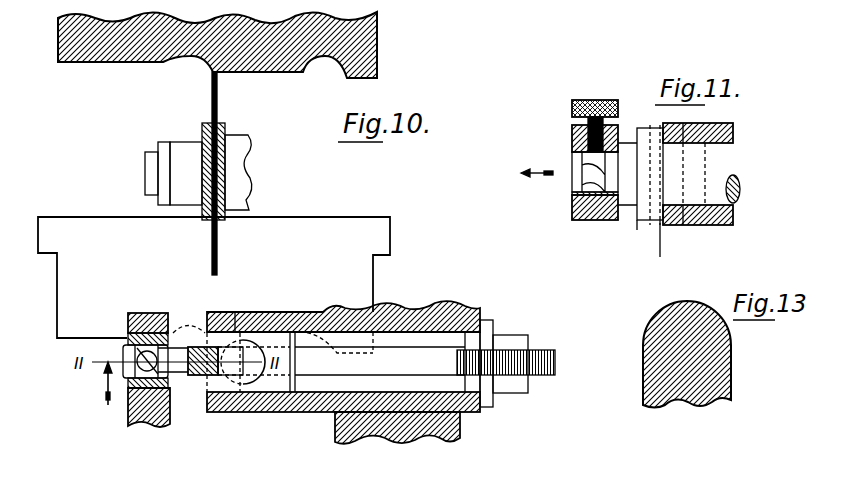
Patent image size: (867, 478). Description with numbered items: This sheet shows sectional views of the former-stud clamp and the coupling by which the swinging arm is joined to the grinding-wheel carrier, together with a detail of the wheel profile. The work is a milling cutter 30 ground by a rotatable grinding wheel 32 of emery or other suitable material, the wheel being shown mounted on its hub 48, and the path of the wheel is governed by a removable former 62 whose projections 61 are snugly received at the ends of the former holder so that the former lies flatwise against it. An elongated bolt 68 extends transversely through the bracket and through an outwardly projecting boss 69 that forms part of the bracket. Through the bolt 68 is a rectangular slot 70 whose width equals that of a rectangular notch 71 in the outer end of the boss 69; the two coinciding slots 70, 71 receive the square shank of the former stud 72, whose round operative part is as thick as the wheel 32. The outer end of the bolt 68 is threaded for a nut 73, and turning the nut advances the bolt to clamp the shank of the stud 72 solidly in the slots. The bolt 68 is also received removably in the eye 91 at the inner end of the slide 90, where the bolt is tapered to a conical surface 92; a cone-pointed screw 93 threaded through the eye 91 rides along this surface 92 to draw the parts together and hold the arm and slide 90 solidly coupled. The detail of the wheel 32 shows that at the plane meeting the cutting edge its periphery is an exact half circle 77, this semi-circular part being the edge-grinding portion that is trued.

In FIG. 10, the milling cutter 30 is at (281, 70).
In FIG. 10, the grinding wheel 32 is at (213, 250).
In FIG. 13, the grinding wheel 32 is at (733, 390).
In FIG. 10, the blade hub / arbor 48 is at (145, 173).
In FIG. 10, the projections 61 is at (44, 232).
In FIG. 10, the former 62 is at (342, 285).
In FIG. 10, the elongated bolt 68 is at (556, 366).
In FIG. 11, the elongated bolt 68 is at (742, 188).
In FIG. 10, the boss 69 is at (280, 412).
In FIG. 11, the boss 69 is at (712, 225).
In FIG. 10, the slot 70 is at (240, 382).
In FIG. 11, the slot 70 is at (712, 158).
In FIG. 10, the notch 71 is at (250, 356).
In FIG. 11, the notch 71 is at (697, 225).
In FIG. 10, the former stud 72 is at (205, 378).
In FIG. 11, the former stud 72 is at (640, 224).
In FIG. 10, the nut 73 is at (515, 393).
In FIG. 13, the semi-circular periphery 77 is at (658, 312).
In FIG. 10, the slide 90 is at (125, 418).
In FIG. 11, the slide 90 is at (590, 225).
In FIG. 10, the eye 91 is at (130, 403).
In FIG. 11, the eye 91 is at (610, 222).
In FIG. 10, the conical surface 92 is at (135, 340).
In FIG. 11, the conical surface 92 is at (588, 182).
In FIG. 10, the screw 93 is at (132, 352).
In FIG. 11, the screw 93 is at (620, 78).